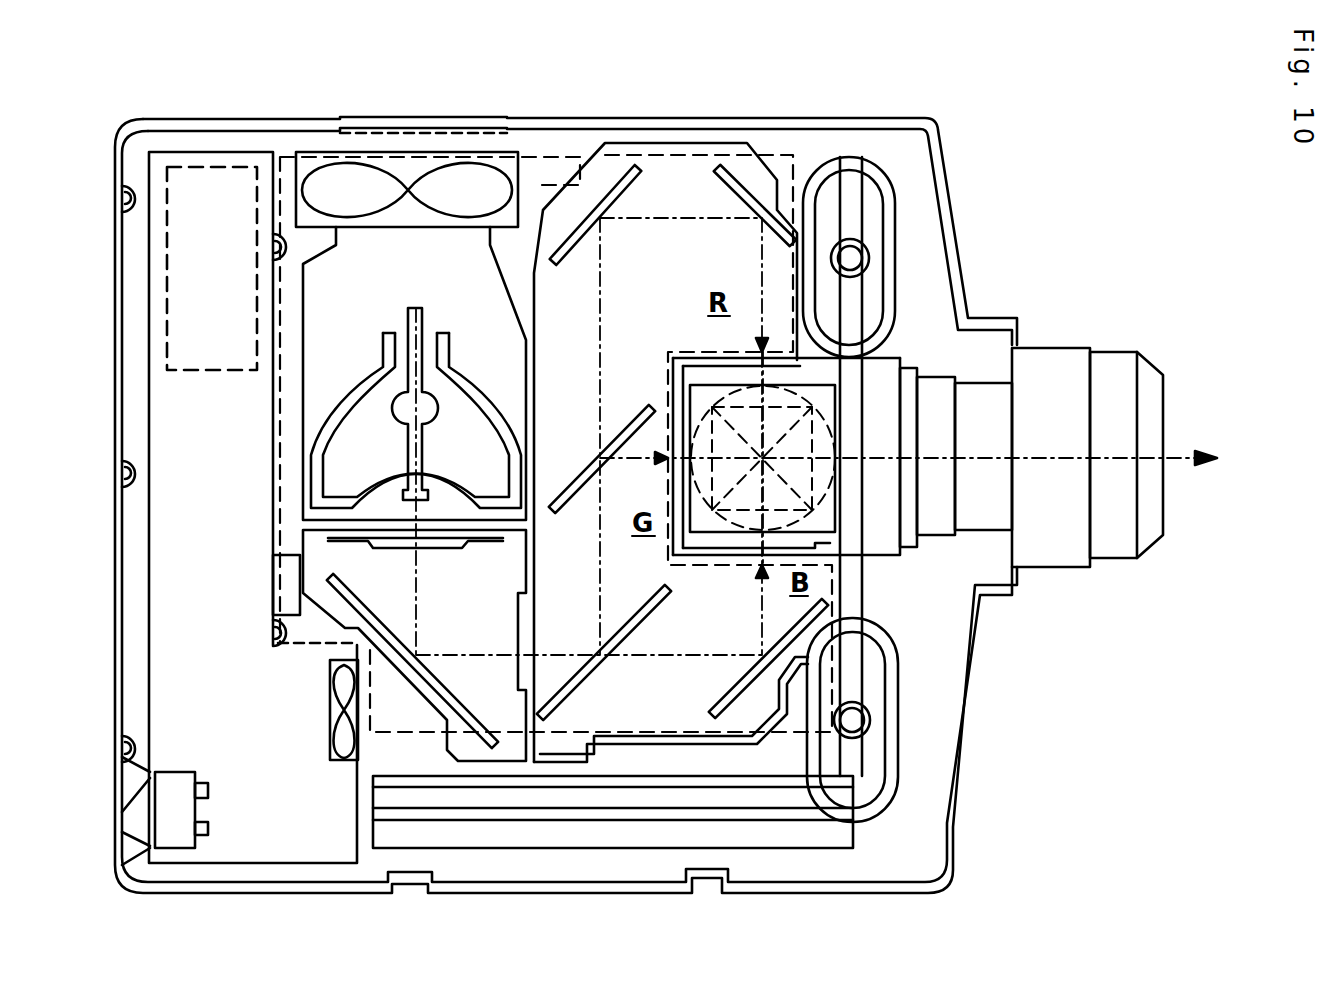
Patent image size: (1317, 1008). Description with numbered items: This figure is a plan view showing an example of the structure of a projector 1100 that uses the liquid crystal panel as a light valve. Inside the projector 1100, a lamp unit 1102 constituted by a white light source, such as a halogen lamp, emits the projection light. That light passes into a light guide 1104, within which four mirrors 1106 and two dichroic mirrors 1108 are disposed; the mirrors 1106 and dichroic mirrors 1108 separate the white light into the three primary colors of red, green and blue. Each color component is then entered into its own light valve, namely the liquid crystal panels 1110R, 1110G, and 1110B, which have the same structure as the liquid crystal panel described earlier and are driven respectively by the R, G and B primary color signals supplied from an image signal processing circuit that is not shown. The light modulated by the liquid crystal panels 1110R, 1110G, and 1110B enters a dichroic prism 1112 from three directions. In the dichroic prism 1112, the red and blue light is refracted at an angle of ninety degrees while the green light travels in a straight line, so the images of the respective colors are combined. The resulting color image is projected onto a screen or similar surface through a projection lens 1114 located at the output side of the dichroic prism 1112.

The projector 1100 is at (955, 131).
The lamp unit 1102 is at (467, 287).
The light guide 1104 is at (608, 150).
The mirrors 1106 is at (715, 192).
The dichroic mirrors 1108 is at (592, 470).
The liquid crystal panel 1110R is at (725, 356).
The liquid crystal panel 1110G is at (680, 425).
The liquid crystal panel 1110B is at (716, 548).
The dichroic prism 1112 is at (872, 545).
The projection lens 1114 is at (1125, 358).